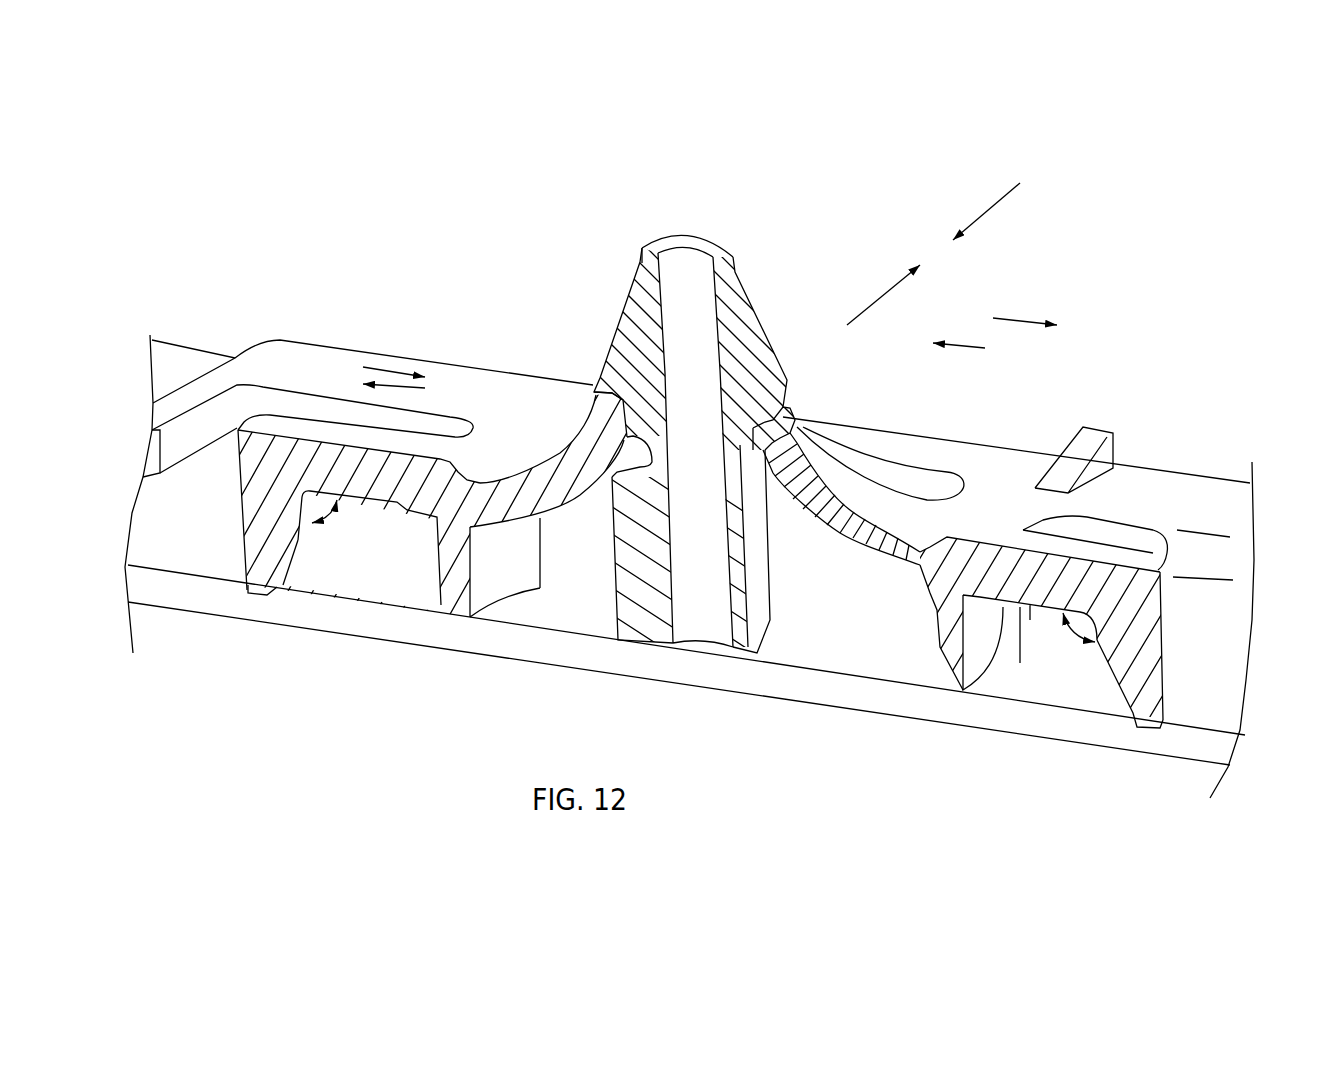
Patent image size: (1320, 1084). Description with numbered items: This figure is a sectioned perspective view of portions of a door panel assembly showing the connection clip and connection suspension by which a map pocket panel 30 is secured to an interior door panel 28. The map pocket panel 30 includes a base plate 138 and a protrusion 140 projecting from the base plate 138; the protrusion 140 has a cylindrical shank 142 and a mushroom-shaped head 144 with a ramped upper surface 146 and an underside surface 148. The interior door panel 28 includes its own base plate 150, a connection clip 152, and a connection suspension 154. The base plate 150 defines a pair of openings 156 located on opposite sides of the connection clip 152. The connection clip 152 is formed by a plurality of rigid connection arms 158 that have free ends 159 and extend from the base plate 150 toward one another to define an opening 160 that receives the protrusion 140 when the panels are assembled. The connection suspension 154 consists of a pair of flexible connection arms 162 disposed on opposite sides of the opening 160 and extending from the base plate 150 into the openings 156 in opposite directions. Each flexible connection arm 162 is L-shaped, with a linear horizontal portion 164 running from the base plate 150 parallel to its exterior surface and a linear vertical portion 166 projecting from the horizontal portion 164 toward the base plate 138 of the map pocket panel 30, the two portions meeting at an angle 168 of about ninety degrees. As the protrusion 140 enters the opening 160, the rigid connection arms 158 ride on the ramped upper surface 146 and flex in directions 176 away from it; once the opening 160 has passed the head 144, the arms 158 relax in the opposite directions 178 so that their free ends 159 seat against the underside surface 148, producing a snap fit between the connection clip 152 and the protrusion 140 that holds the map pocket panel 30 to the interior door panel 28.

The interior door panel 28 is at (205, 262).
The map pocket panel 30 is at (220, 628).
The base plate 138 is at (807, 655).
The protrusion 140 is at (702, 583).
The shank 142 is at (615, 572).
The head 144 is at (730, 243).
The ramped upper surface 146 is at (757, 335).
The underside surface 148 is at (777, 422).
The base plate 150 is at (443, 382).
The connection clip 152 is at (945, 457).
The connection suspension 154 is at (1210, 656).
The openings 156 is at (307, 417).
The rigid connection arms 158 is at (528, 448).
The free ends 159 is at (610, 400).
The opening 160 is at (637, 425).
The flexible connection arms 162 is at (247, 423).
The linear horizontal portion 164 is at (358, 500).
The linear vertical portion 166 is at (240, 518).
The angle 168 is at (327, 523).
The directions 176 is at (418, 389).
The directions 178 is at (398, 398).